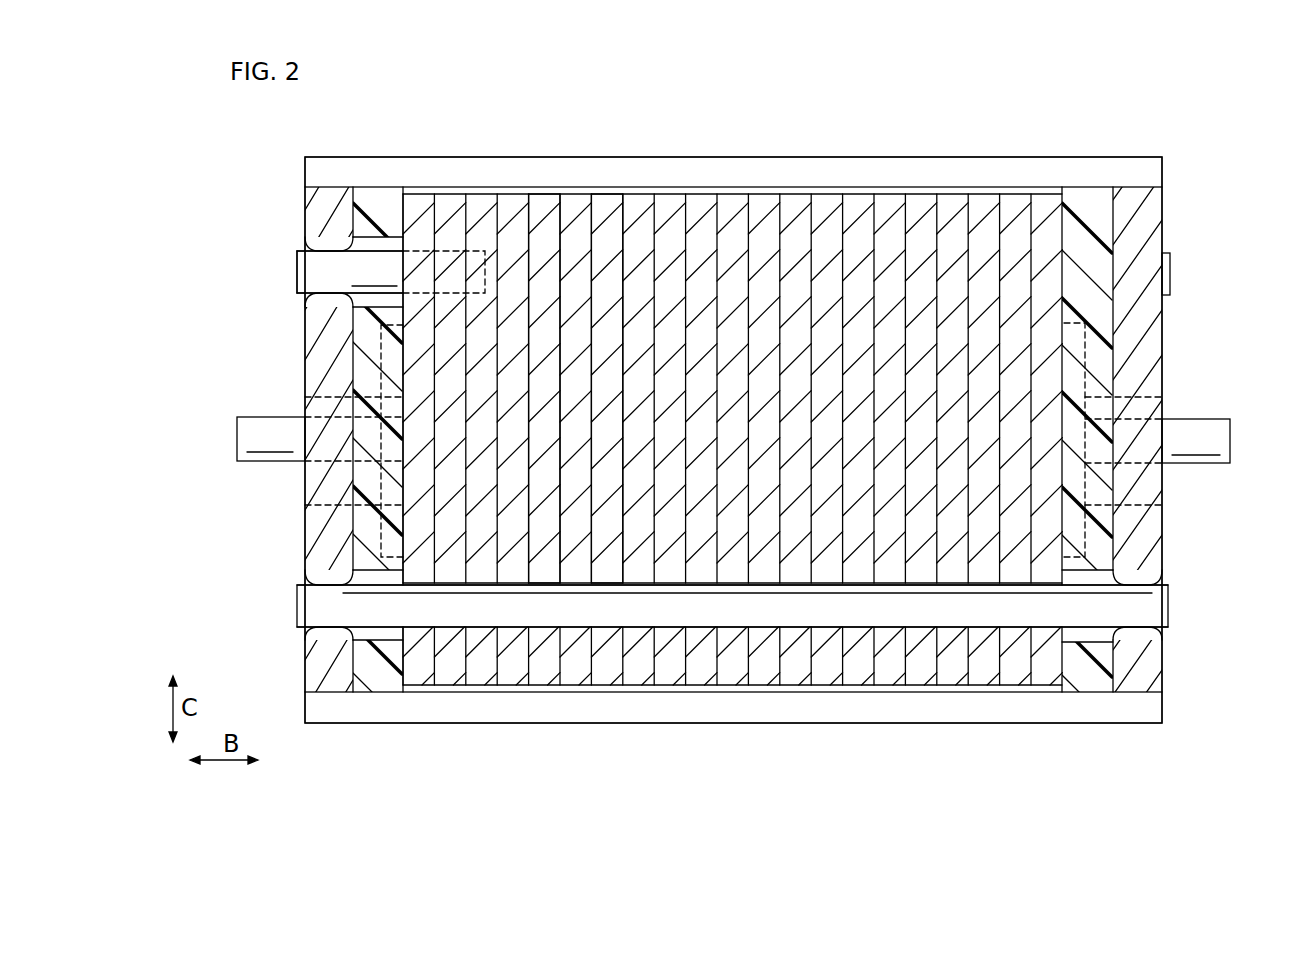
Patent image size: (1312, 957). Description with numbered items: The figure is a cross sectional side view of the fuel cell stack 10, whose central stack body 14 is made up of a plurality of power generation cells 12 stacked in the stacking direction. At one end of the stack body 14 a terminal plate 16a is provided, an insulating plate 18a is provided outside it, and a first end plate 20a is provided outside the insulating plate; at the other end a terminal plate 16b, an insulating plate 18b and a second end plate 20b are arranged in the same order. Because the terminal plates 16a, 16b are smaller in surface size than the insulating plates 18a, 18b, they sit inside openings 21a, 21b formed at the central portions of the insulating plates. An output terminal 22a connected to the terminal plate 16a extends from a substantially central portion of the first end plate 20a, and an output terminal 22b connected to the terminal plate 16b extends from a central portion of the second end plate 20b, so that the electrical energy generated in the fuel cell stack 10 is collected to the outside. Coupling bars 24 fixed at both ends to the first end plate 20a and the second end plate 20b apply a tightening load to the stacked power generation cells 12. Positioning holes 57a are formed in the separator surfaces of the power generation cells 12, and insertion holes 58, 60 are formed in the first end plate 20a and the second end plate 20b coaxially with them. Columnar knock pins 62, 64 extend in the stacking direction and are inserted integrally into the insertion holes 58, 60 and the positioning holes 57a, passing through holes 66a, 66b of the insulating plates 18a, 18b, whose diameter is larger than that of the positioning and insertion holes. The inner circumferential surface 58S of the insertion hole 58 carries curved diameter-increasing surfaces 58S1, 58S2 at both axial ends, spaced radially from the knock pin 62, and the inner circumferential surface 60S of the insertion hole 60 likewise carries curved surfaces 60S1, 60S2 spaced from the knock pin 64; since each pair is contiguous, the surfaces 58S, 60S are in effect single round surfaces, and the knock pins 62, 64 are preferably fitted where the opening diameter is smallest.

The fuel cell stack 10 is at (970, 99).
The power generation cell 12 is at (545, 190).
The stack body 14 is at (632, 106).
The terminal plate 16a is at (305, 397).
The terminal plate 16b is at (1162, 397).
The insulating plate 18a is at (376, 205).
The insulating plate 18b is at (1088, 205).
The first end plate 20a is at (331, 183).
The second end plate 20b is at (1139, 184).
The opening 21a is at (305, 505).
The opening 21b is at (1162, 501).
The output terminal 22a is at (237, 441).
The output terminal 22b is at (1214, 441).
The coupling bar 24 is at (459, 163).
The positioning hole 57a is at (655, 573).
The insertion hole 58 is at (303, 584).
The inner circumferential surface 58S is at (218, 582).
The curved surface 58S1 is at (305, 625).
The curved surface 58S2 is at (350, 625).
The insertion hole 60 is at (303, 294).
The inner circumferential surface 60S is at (218, 248).
The curved surface 60S1 is at (365, 250).
The curved surface 60S2 is at (362, 256).
The knock pin 62 is at (374, 608).
The knock pin 64 is at (357, 247).
The hole 66a is at (403, 612).
The hole 66b is at (400, 240).